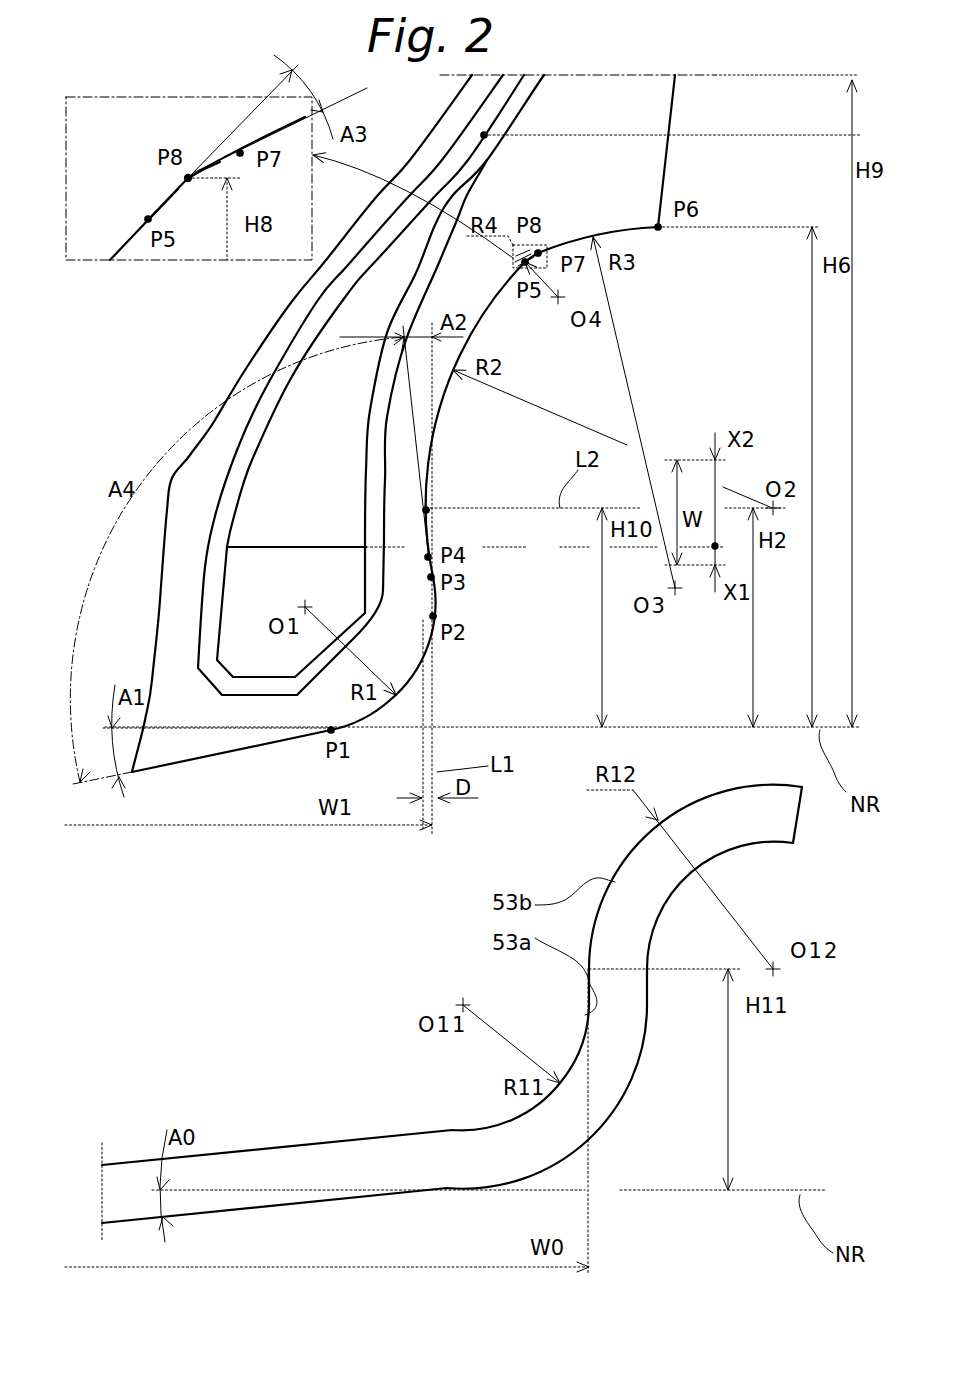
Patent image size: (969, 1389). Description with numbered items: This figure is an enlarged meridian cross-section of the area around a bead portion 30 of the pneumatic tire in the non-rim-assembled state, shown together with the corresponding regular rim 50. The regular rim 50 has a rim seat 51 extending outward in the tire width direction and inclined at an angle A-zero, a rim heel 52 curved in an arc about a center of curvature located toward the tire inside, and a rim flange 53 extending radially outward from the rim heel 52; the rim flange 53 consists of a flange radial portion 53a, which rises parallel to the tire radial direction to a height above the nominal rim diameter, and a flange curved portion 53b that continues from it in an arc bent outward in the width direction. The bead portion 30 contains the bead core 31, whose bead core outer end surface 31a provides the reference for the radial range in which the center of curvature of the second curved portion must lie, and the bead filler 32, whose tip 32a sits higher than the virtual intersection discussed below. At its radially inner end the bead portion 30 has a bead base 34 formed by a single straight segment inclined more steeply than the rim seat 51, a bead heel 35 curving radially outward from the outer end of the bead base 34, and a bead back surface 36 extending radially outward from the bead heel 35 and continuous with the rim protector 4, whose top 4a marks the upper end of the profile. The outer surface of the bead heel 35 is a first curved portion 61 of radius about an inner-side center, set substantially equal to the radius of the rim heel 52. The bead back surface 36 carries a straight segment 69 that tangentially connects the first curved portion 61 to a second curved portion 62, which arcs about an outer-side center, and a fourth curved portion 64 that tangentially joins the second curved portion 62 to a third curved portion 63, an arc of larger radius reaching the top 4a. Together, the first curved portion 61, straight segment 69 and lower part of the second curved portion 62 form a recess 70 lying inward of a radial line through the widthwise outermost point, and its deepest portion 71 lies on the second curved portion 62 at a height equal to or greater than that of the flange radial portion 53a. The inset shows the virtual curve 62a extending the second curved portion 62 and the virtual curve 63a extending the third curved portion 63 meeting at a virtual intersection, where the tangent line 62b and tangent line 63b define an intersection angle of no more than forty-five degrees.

The bead portion 30 is at (150, 430).
The bead core 31 is at (277, 594).
The bead core outer end surface 31a is at (277, 547).
The bead filler 32 is at (332, 409).
The tip of bead filler 32a is at (484, 135).
The bead base 34 is at (200, 757).
The bead heel 35 is at (380, 708).
The bead back surface 36 is at (480, 320).
The rim protector 4 is at (654, 221).
The top of rim protector 4a is at (662, 237).
The first curved portion 61 is at (422, 672).
The second curved portion 62 is at (442, 403).
The virtual curve 62a is at (170, 187).
The tangent line 62b is at (296, 98).
The third curved portion 63 is at (600, 235).
The virtual curve 63a is at (202, 170).
The tangent line 63b is at (360, 90).
The fourth curved portion 64 is at (190, 182).
The straight segment 69 is at (432, 567).
The recess 70 is at (440, 497).
The deepest portion 71 is at (428, 512).
The regular rim 50 is at (452, 1004).
The rim seat 51 is at (307, 1155).
The rim heel 52 is at (603, 1098).
The rim flange 53 is at (621, 877).
The flange radial portion 53a is at (720, 905).
The flange curved portion 53b is at (695, 877).